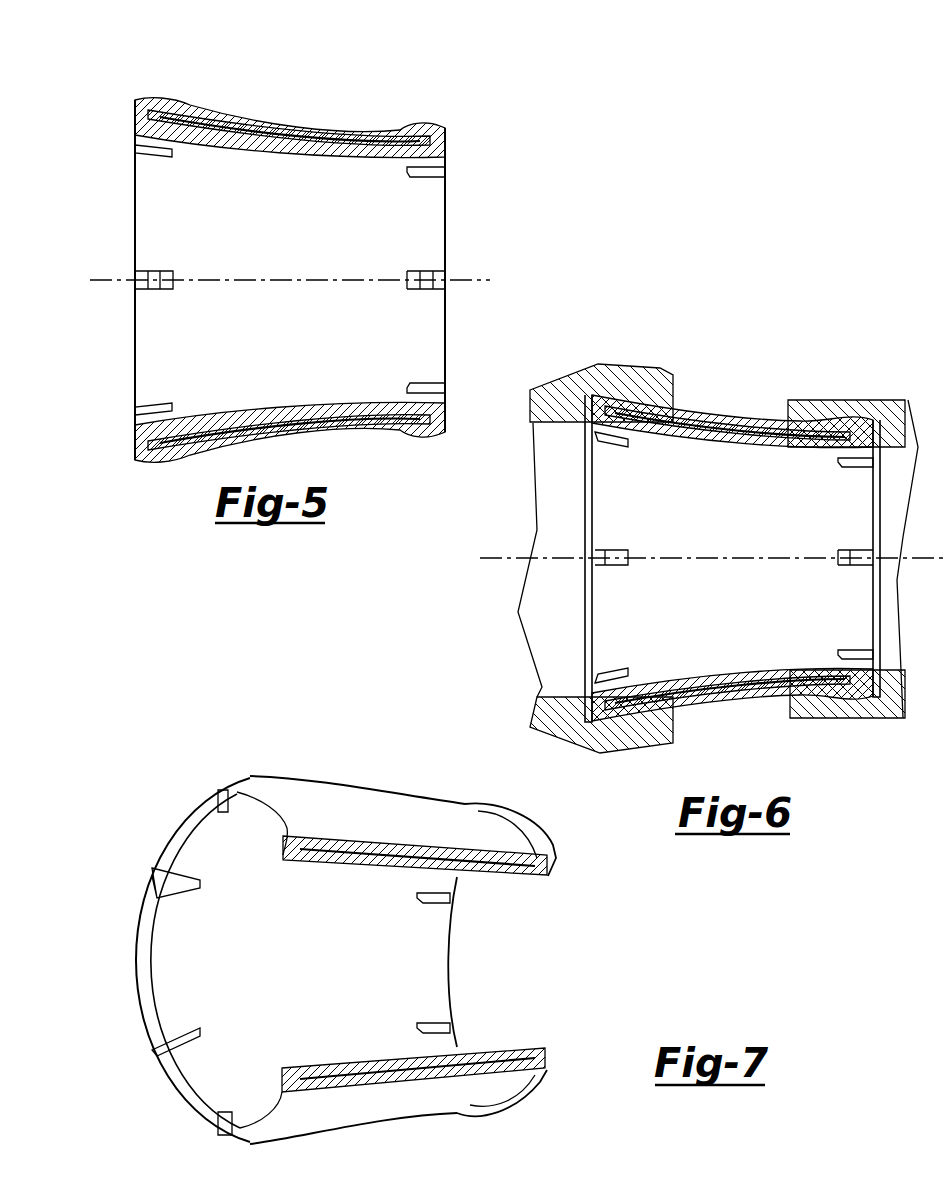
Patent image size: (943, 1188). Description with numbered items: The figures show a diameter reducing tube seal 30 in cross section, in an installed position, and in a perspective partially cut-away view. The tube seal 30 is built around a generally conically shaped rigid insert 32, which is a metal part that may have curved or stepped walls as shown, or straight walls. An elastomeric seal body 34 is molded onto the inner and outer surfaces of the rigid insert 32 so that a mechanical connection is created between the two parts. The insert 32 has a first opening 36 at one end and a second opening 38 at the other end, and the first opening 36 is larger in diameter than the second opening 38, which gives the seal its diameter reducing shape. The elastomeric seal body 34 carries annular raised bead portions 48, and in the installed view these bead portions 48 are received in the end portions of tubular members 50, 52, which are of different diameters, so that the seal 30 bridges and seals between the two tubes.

In FIG. 5, the diameter reducing tube seal 30 is at (336, 92).
In FIG. 6, the diameter reducing tube seal 30 is at (745, 350).
In FIG. 7, the diameter reducing tube seal 30 is at (353, 933).
In FIG. 5, the rigid conical insert 32 is at (268, 140).
In FIG. 6, the rigid conical insert 32 is at (766, 440).
In FIG. 7, the rigid conical insert 32 is at (523, 868).
In FIG. 5, the elastomeric seal body 34 is at (268, 132).
In FIG. 6, the elastomeric seal body 34 is at (742, 418).
In FIG. 7, the elastomeric seal body 34 is at (412, 853).
In FIG. 5, the first opening 36 is at (134, 422).
In FIG. 7, the first opening 36 is at (210, 1077).
In FIG. 5, the second opening 38 is at (422, 222).
In FIG. 6, the second opening 38 is at (732, 558).
In FIG. 7, the second opening 38 is at (435, 958).
In FIG. 5, the annular raised bead portions 48 is at (158, 103).
In FIG. 6, the annular raised bead portions 48 is at (732, 558).
In FIG. 7, the annular raised bead portions 48 is at (257, 788).
In FIG. 6, the tubular member 50 is at (640, 368).
In FIG. 6, the tubular member 52 is at (884, 410).